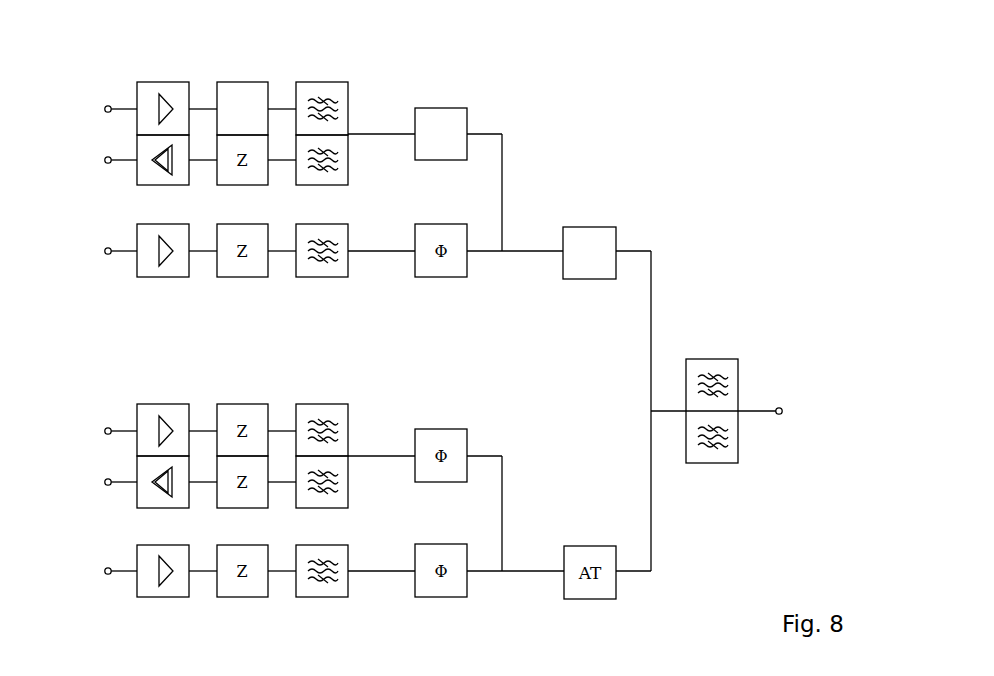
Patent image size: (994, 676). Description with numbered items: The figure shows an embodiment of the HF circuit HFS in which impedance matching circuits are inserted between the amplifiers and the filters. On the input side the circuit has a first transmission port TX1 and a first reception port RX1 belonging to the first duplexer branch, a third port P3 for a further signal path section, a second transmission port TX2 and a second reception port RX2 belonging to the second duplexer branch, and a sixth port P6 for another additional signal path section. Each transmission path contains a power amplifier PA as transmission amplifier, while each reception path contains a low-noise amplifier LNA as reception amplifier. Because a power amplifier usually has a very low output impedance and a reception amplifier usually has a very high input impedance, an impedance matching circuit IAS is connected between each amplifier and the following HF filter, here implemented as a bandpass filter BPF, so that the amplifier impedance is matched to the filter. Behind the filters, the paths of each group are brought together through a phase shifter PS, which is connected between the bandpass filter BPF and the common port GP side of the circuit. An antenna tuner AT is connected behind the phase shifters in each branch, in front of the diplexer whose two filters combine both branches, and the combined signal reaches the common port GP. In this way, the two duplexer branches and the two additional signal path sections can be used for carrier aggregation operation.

The first transmission port TX1 is at (104, 107).
The first reception port RX1 is at (104, 158).
The third port P3 is at (104, 249).
The second transmission port TX2 is at (104, 429).
The second reception port RX2 is at (104, 480).
The sixth port P6 is at (104, 569).
The power amplifier PA is at (144, 82).
The low-noise amplifier LNA is at (190, 182).
The impedance matching circuit IAS is at (245, 82).
The bandpass filter BPF is at (315, 82).
The phase shifter PS is at (435, 108).
The antenna tuner AT is at (587, 227).
The HF circuit HFS is at (684, 91).
The common port GP is at (782, 413).